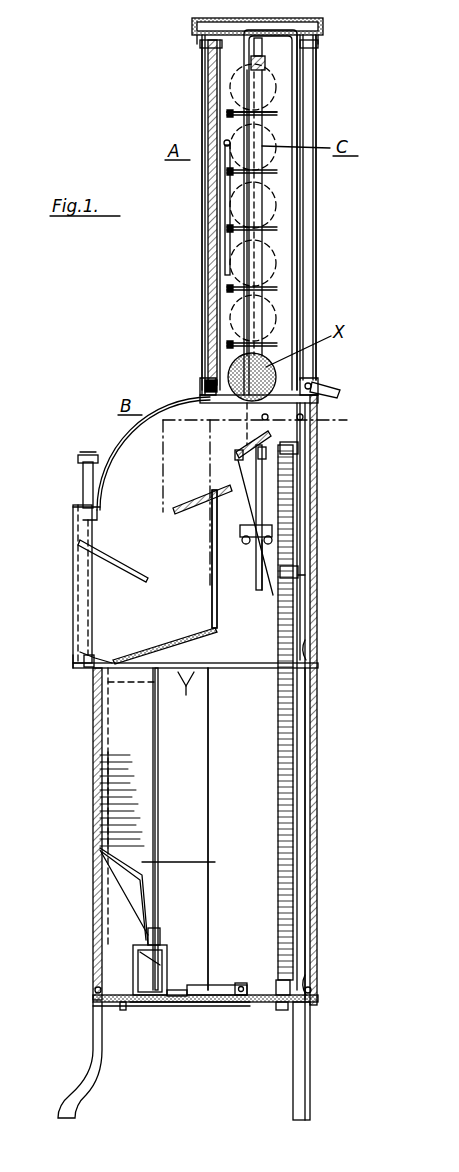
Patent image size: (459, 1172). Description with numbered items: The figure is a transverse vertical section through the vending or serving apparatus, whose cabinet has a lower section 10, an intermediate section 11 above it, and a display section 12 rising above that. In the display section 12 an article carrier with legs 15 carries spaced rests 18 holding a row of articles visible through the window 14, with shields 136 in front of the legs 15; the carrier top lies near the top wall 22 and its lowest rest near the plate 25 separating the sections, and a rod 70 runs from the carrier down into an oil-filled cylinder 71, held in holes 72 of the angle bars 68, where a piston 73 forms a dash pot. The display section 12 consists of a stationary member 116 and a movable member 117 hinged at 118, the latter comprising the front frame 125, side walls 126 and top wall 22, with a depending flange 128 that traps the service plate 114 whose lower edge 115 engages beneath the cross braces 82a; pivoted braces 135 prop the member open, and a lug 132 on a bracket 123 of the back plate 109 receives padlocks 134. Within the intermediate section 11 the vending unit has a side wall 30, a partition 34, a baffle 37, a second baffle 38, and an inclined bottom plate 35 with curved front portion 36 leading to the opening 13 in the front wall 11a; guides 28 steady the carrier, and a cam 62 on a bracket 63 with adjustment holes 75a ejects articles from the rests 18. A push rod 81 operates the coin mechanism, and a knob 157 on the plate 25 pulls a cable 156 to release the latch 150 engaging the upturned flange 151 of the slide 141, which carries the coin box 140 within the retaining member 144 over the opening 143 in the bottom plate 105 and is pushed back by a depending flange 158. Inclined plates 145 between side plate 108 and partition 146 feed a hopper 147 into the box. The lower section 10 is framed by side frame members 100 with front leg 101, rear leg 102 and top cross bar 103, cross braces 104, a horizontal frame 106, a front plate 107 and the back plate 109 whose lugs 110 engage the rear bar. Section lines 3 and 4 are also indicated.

The top wall 22 is at (202, 19).
The display section 12 is at (238, 215).
The window 14 is at (208, 268).
The movable member 117 is at (205, 45).
The hinges 118 is at (312, 42).
The stationary member 116 is at (306, 72).
The rod 70 is at (292, 118).
The legs 15 is at (254, 250).
The rests 18 is at (277, 232).
The shields 136 is at (228, 116).
The pivoted braces 135 is at (224, 190).
The front frame 125 is at (203, 232).
The side walls 126 is at (305, 293).
The plate 25 is at (218, 375).
The depending flange 128 is at (212, 390).
The brackets 123 is at (320, 410).
The lug 132 is at (330, 381).
The padlocks 134 is at (342, 396).
The section line 4 is at (207, 392).
The section line 3 is at (350, 421).
The lugs 110 is at (310, 642).
The cylinder 71 is at (288, 756).
The holes 72 is at (300, 520).
The angle bars 68 is at (299, 447).
The piston 73 is at (299, 576).
The intermediate section 11 is at (146, 458).
The service plate 114 is at (134, 502).
The operating knob 157 is at (252, 418).
The cam 62 is at (272, 443).
The bracket 63 is at (270, 560).
The holes 75a is at (258, 512).
The guides 28 is at (222, 482).
The baffle 37 is at (165, 493).
The lower edge 115 is at (131, 492).
The push rod 81 is at (70, 480).
The opening 13 is at (73, 580).
The cross braces 82a is at (92, 518).
The front wall 11a is at (48, 532).
The second baffle 38 is at (126, 567).
The partition 34 is at (212, 578).
The side wall 30 is at (116, 599).
The bottom plate 35 is at (166, 638).
The curved front portion 36 is at (96, 654).
The horizontal frame 106 is at (80, 670).
The lower section 10 is at (221, 834).
The back plate 109 is at (333, 834).
The side plate 108 is at (240, 829).
The cable 156 is at (209, 700).
The top cross bar 103 is at (185, 690).
The partition 146 is at (158, 746).
The inclined plates 145 is at (156, 796).
The front plate 107 is at (100, 781).
The hopper 147 is at (176, 896).
The retaining member 144 is at (166, 945).
The coin box 140 is at (140, 978).
The upturned flange 151 is at (180, 985).
The latch 150 is at (222, 985).
The cross braces 104 is at (93, 993).
The front leg 101 is at (88, 1042).
The depending flange 158 is at (123, 1012).
The slide 141 is at (150, 1005).
The opening 143 is at (148, 1008).
The bottom plate 105 is at (262, 1010).
The side frame members 100 is at (312, 1046).
The rear leg 102 is at (303, 1078).